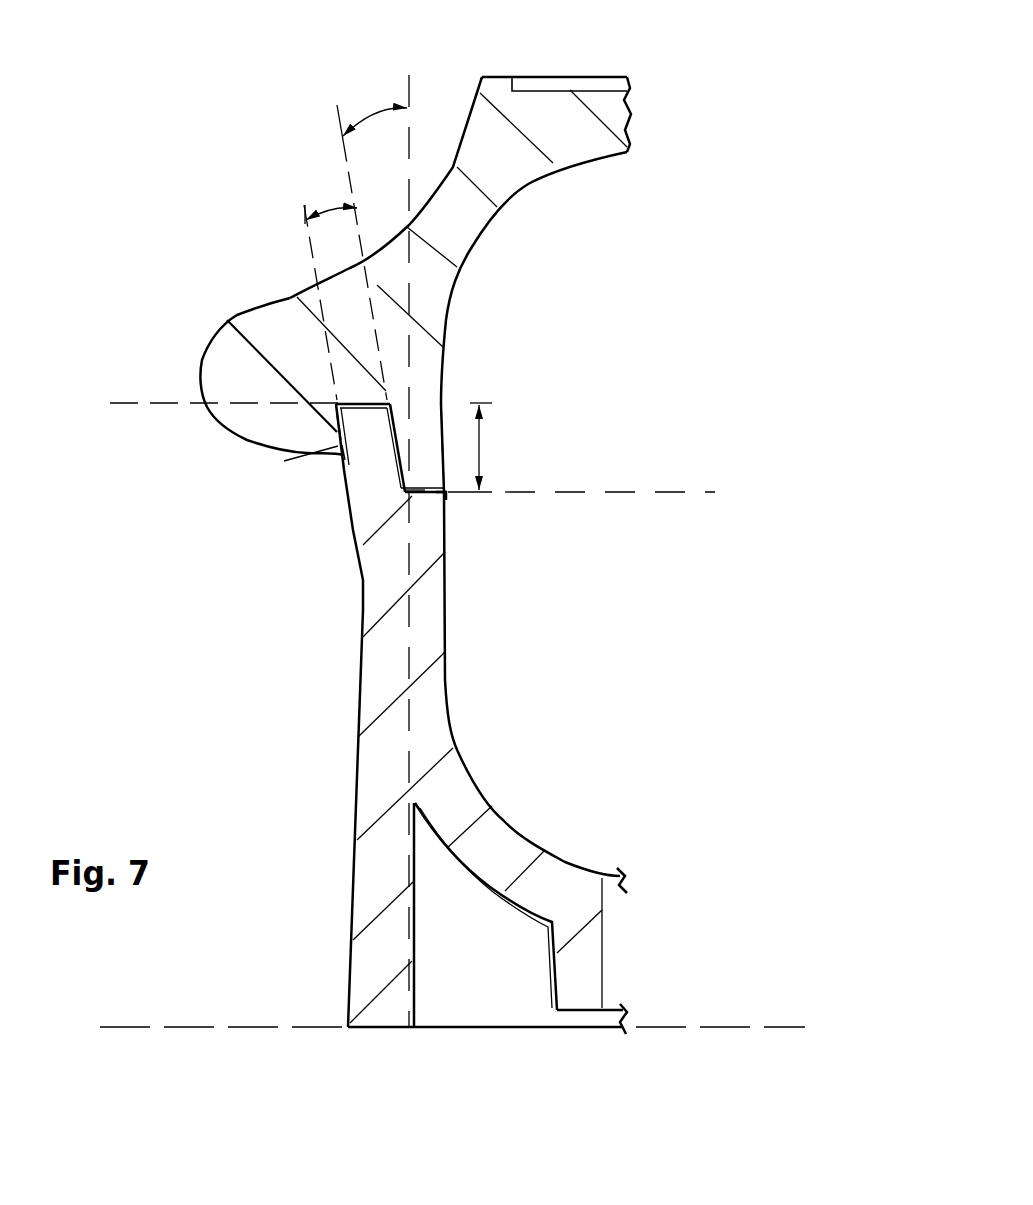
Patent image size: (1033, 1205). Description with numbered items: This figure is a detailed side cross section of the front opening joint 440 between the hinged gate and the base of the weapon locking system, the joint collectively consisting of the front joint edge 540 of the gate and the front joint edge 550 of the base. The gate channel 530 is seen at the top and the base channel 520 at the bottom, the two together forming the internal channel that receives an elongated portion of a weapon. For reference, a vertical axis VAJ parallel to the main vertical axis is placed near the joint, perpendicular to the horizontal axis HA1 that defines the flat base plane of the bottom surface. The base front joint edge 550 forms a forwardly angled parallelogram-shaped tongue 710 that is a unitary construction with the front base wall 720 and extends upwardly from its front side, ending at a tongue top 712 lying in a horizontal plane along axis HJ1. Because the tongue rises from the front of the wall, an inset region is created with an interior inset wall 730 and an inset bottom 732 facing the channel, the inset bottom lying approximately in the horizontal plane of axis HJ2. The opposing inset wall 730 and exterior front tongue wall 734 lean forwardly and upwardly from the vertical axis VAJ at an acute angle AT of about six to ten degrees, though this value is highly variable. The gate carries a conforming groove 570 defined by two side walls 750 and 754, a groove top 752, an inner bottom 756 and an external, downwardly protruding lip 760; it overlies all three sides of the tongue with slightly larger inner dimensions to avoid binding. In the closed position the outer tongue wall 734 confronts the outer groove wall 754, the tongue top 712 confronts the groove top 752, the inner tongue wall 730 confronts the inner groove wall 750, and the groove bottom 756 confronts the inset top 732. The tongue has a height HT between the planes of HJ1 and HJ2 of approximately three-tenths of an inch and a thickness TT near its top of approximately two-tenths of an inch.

The gate channel 530 is at (529, 187).
The base channel 520 is at (541, 849).
The front base wall 720 is at (373, 710).
The tongue 710 is at (355, 487).
The front joint edge of the base 550 is at (343, 517).
The groove 570 is at (325, 398).
The tongue top 712 is at (335, 438).
The outer groove wall 754 is at (333, 429).
The lip 760 is at (286, 461).
The outer tongue wall 734 is at (335, 451).
The groove top 752 is at (370, 397).
The interior inset wall 730 is at (404, 417).
The inner groove wall 750 is at (444, 410).
The front joint edge of the gate 540 is at (449, 438).
The groove bottom 756 is at (433, 485).
The front opening joint 440 is at (451, 497).
The inset bottom 732 is at (433, 497).
The vertical axis VAJ is at (410, 80).
The horizontal axis of the tongue top plane HJ1 is at (163, 405).
The horizontal axis of the inset bottom plane HJ2 is at (613, 494).
The horizontal axis HA1 is at (195, 1027).
The tongue height HT is at (480, 448).
The tongue thickness TT is at (330, 203).
The acute angle AT is at (369, 112).